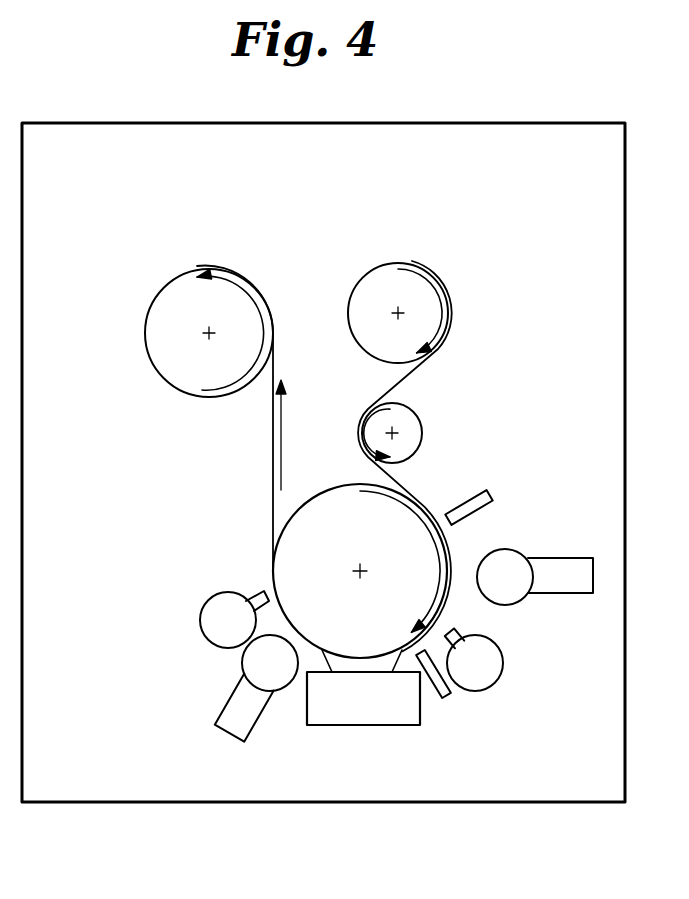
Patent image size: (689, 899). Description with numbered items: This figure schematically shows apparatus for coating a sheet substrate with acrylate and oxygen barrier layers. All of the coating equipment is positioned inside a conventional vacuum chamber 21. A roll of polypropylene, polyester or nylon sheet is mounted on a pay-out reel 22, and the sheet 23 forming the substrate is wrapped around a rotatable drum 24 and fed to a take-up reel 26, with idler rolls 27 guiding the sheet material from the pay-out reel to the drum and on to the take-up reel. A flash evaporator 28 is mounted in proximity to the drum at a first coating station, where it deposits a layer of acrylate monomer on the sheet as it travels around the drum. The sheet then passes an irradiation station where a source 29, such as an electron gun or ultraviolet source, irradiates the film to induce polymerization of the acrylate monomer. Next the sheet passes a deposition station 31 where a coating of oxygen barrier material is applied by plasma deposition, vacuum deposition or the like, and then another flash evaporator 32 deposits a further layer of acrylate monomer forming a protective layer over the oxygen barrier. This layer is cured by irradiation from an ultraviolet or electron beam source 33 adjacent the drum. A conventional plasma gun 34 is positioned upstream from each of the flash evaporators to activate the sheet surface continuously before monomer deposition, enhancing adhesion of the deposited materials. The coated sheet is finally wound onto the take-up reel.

The vacuum chamber 21 is at (513, 123).
The pay-out reel 22 is at (429, 266).
The sheet 23 is at (418, 370).
The rotatable drum 24 is at (334, 489).
The take-up reel 26 is at (240, 270).
The idler rolls 27 is at (423, 422).
The flash evaporator 28 is at (562, 557).
The source 29 is at (503, 661).
The deposition station 31 is at (365, 726).
The flash evaporator 32 is at (226, 739).
The ultraviolet or electron beam source 33 is at (206, 637).
The plasma gun 34 is at (478, 489).